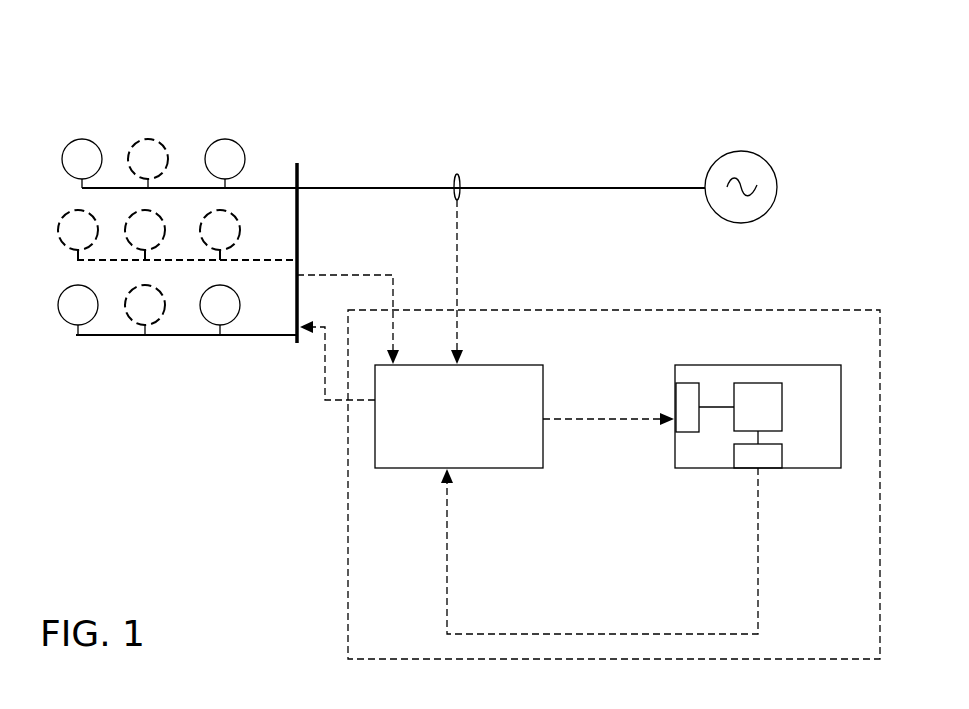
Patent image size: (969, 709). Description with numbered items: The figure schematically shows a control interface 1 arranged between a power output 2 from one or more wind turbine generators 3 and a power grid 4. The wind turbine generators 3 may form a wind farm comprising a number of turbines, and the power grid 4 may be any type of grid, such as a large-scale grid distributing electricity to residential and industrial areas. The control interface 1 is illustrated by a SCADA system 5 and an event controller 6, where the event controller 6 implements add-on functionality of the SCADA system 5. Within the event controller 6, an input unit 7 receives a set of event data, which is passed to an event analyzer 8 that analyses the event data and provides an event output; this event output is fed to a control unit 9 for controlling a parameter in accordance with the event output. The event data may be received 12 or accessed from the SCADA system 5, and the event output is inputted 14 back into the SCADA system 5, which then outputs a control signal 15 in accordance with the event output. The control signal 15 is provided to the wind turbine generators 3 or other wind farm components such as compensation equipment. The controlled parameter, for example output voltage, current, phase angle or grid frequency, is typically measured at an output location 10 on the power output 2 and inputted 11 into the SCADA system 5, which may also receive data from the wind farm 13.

The control interface 1 is at (348, 610).
The power output 2 is at (378, 168).
The wind turbine generators 3 is at (210, 95).
The power grid 4 is at (633, 170).
The SCADA system 5 is at (493, 363).
The event controller 6 is at (722, 363).
The input unit 7 is at (687, 397).
The event analyzer 8 is at (783, 408).
The control unit 9 is at (783, 455).
The output location 10 is at (458, 173).
The parameter input 11 is at (457, 273).
The event data reception 12 is at (567, 418).
The wind farm 13 is at (325, 273).
The event output input 14 is at (697, 633).
The control signal 15 is at (323, 372).